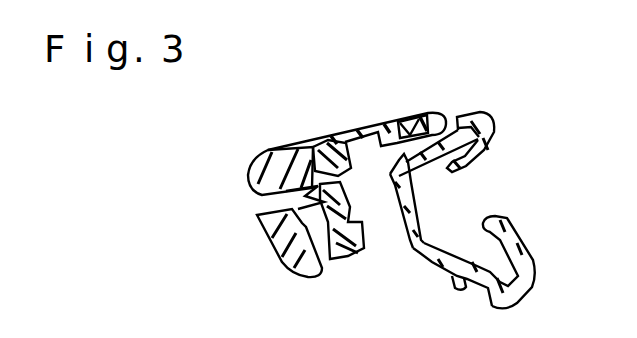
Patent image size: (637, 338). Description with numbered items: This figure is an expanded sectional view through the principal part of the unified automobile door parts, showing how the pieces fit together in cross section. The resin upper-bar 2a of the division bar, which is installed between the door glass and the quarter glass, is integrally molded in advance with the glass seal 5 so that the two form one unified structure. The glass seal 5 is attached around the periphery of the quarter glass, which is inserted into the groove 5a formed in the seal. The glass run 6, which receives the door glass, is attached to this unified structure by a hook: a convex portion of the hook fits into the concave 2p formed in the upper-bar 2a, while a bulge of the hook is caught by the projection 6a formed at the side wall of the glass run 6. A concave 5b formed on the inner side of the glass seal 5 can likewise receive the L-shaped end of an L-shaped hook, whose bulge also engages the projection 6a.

The upper-bar 2a is at (264, 151).
The concave 2p is at (352, 216).
The glass seal 5 is at (249, 164).
The groove 5a is at (282, 201).
The concave 5b is at (300, 226).
The glass run 6 is at (488, 288).
The projection 6a is at (450, 276).